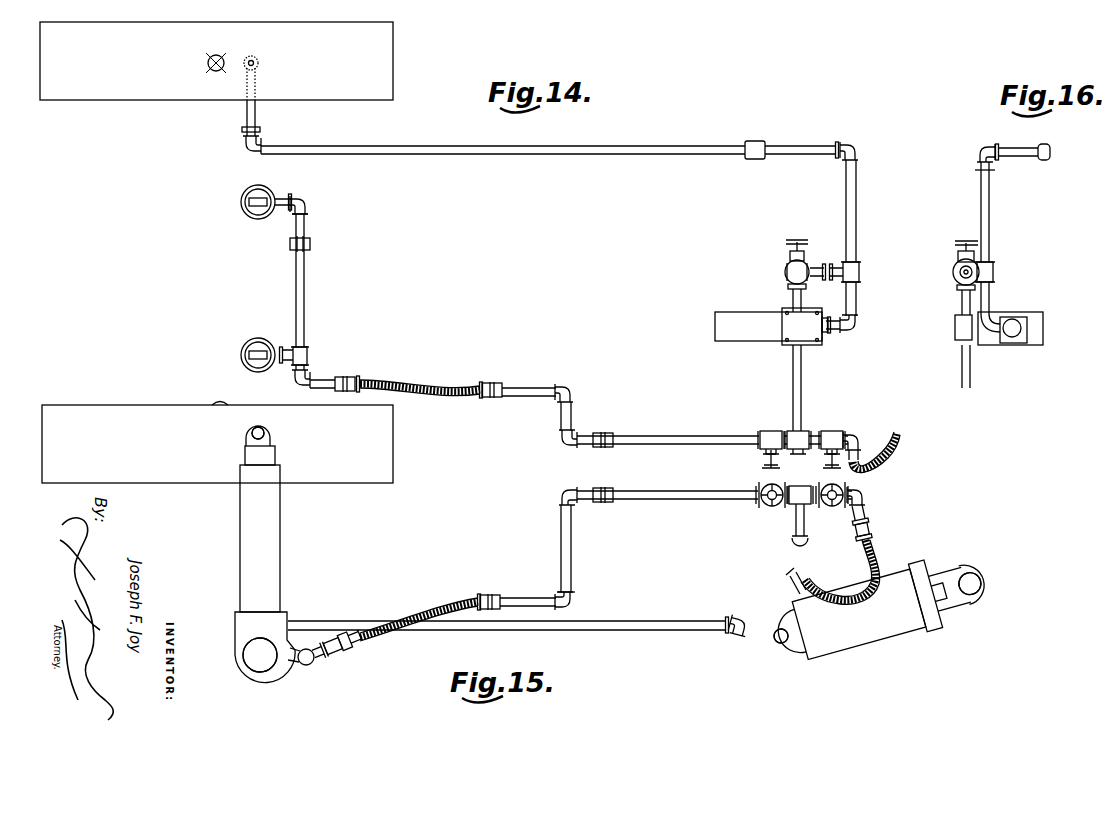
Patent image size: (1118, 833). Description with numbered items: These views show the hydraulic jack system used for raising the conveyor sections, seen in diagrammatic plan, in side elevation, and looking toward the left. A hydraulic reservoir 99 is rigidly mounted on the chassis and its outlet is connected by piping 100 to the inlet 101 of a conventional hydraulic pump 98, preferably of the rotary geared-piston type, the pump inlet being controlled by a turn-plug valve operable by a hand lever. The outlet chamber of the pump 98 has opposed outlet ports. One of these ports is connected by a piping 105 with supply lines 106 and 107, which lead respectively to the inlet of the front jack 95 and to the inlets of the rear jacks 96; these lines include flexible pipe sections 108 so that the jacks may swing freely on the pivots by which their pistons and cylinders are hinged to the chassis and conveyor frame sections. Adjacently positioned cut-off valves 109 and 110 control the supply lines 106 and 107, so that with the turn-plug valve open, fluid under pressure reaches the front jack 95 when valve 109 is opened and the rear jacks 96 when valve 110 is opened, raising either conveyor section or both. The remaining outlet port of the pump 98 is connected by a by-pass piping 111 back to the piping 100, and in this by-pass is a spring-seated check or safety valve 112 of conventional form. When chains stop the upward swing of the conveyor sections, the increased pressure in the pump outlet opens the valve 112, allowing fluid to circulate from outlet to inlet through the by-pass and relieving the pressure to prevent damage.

In FIG. 15, the hydraulic jack 95 is at (879, 608).
In FIG. 14, the hydraulic jacks 96 is at (240, 204).
In FIG. 15, the hydraulic jacks 96 is at (265, 554).
In FIG. 14, the hydraulic pump 98 is at (768, 326).
In FIG. 16, the hydraulic pump 98 is at (1044, 332).
In FIG. 14, the hydraulic reservoir 99 is at (216, 61).
In FIG. 15, the hydraulic reservoir 99 is at (217, 443).
In FIG. 14, the piping 100 is at (858, 217).
In FIG. 15, the piping 100 is at (650, 633).
In FIG. 16, the piping 100 is at (1044, 161).
In FIG. 14, the pump inlet 101 is at (845, 338).
In FIG. 16, the pump inlet 101 is at (1017, 350).
In FIG. 14, the piping 105 is at (803, 391).
In FIG. 14, the supply line 106 is at (859, 433).
In FIG. 15, the supply line 106 is at (870, 512).
In FIG. 14, the supply line 107 is at (566, 381).
In FIG. 15, the supply line 107 is at (572, 548).
In FIG. 14, the flexible pipe sections 108 is at (437, 395).
In FIG. 14, the cut-off valve 109 is at (823, 465).
In FIG. 15, the cut-off valve 109 is at (834, 507).
In FIG. 14, the cut-off valve 110 is at (760, 465).
In FIG. 15, the cut-off valve 110 is at (770, 507).
In FIG. 14, the by-pass piping 111 is at (790, 306).
In FIG. 16, the by-pass piping 111 is at (958, 305).
In FIG. 14, the safety valve 112 is at (785, 263).
In FIG. 16, the safety valve 112 is at (953, 270).